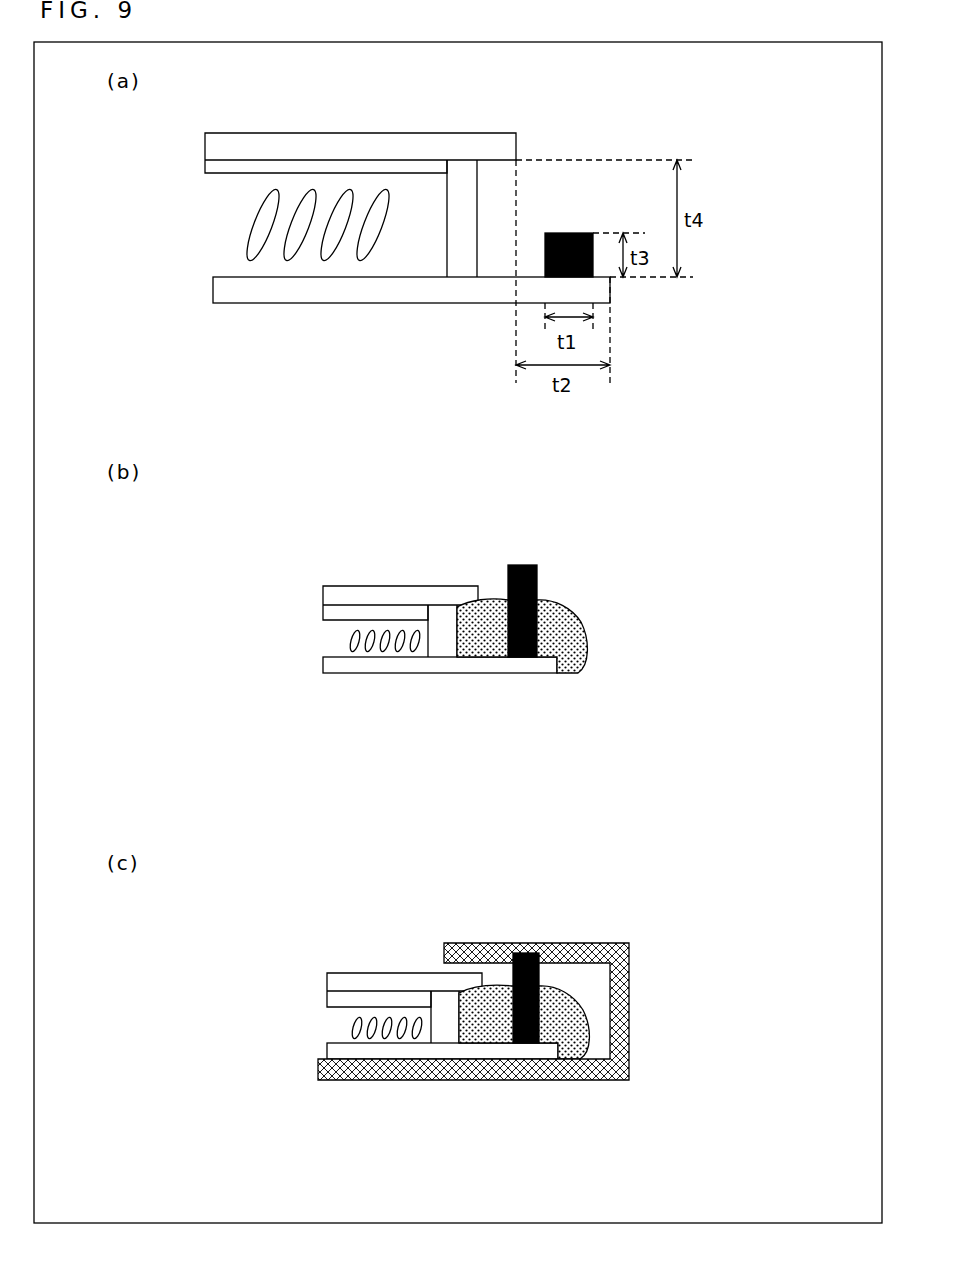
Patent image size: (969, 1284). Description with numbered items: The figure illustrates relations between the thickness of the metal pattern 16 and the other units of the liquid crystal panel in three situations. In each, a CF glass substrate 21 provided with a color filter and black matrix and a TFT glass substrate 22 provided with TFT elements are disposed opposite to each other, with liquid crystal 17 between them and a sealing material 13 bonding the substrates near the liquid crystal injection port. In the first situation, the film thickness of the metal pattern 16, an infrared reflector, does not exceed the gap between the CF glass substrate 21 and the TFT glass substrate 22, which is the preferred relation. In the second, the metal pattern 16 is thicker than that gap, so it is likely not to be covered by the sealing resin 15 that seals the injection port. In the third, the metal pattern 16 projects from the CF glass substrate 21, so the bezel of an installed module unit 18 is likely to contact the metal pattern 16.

The sealing material 13 is at (462, 277).
The sealing resin 15 is at (561, 619).
The metal pattern 16 is at (570, 233).
The liquid crystal 17 is at (256, 226).
The module unit 18 is at (629, 1011).
The CF glass substrate 21 is at (205, 150).
The TFT glass substrate 22 is at (213, 292).